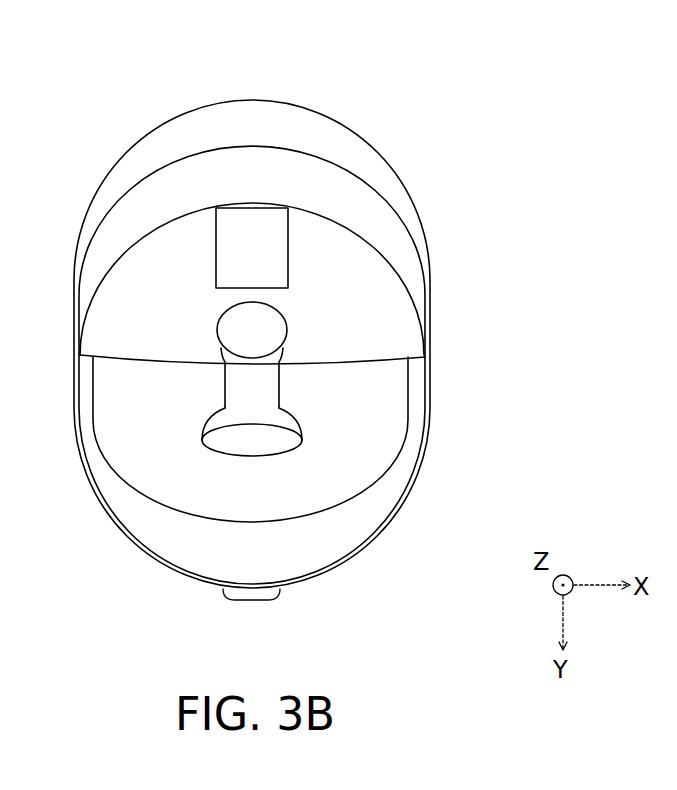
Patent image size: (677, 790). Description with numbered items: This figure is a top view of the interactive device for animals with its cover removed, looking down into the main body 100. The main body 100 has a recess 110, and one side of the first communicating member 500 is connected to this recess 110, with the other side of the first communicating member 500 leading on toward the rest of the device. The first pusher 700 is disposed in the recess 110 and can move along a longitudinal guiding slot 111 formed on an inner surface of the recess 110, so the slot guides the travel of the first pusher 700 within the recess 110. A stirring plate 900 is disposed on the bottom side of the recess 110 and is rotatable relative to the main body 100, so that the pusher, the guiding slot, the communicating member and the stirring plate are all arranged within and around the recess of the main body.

The main body 100 is at (359, 157).
The recess 110 is at (353, 282).
The longitudinal guiding slot 111 is at (255, 390).
The first communicating member 500 is at (252, 443).
The first pusher 700 is at (255, 329).
The stirring plate 900 is at (250, 247).